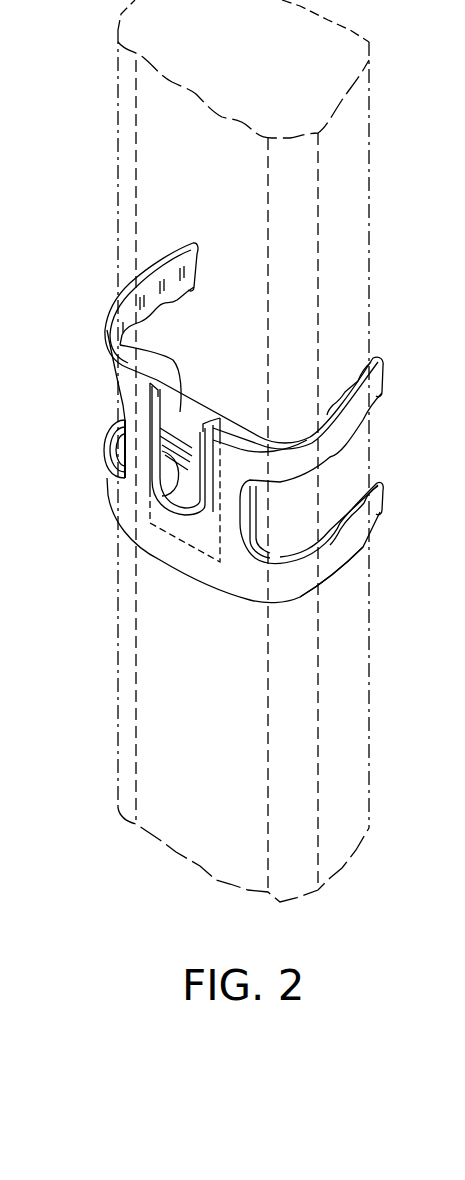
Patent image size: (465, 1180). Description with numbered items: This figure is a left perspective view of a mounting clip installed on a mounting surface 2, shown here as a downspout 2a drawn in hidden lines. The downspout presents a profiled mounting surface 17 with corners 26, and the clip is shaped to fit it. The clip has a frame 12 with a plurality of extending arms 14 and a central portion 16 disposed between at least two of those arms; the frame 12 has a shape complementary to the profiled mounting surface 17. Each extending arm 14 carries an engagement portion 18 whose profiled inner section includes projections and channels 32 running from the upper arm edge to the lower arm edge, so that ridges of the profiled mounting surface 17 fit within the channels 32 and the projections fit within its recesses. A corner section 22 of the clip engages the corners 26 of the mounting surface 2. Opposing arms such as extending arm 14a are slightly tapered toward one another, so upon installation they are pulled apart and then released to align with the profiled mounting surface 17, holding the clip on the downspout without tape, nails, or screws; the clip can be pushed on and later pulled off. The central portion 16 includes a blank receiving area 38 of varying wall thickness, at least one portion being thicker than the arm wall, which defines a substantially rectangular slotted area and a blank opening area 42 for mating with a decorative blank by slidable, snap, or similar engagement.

The mounting surface 2 is at (118, 127).
The downspout 2a is at (354, 108).
The profiled mounting surface 17 is at (369, 175).
The corners 26 is at (304, 840).
The frame 12 is at (112, 507).
The extending arms 14 is at (152, 264).
The opposing extending arm 14a is at (326, 500).
The central portion 16 is at (195, 590).
The engagement portion 18 is at (177, 300).
The corner section 22 is at (286, 597).
The channels 32 is at (464, 652).
The blank receiving area 38 is at (125, 346).
The blank opening area 42 is at (160, 452).